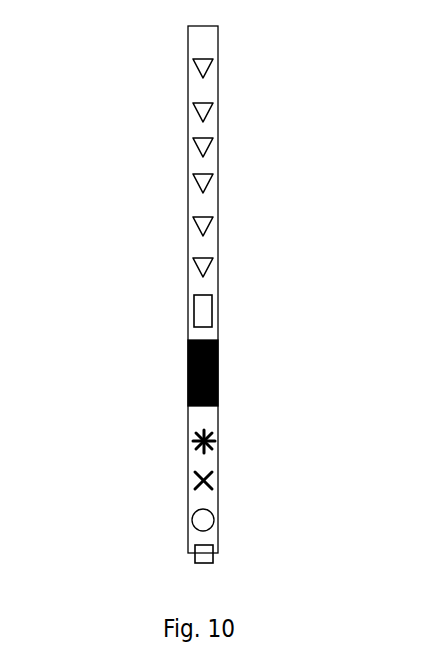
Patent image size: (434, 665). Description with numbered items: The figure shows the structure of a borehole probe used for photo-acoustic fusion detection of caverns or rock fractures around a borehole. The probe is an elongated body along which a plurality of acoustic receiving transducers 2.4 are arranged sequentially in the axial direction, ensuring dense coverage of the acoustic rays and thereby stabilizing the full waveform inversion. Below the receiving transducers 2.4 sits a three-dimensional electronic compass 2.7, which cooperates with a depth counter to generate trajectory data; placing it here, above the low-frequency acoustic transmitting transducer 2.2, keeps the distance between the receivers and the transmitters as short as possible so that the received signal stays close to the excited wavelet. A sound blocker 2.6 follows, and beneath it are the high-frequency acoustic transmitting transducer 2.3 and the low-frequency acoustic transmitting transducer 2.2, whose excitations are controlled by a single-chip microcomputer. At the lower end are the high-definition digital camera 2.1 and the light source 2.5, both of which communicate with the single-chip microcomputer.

The high-definition digital camera 2.1 is at (203, 526).
The low-frequency acoustic transmitting transducer 2.2 is at (195, 482).
The high-frequency acoustic transmitting transducer 2.3 is at (190, 440).
The acoustic receiving transducers 2.4 is at (205, 113).
The light source 2.5 is at (195, 558).
The sound blocker 2.6 is at (219, 383).
The three-dimensional electronic compass 2.7 is at (202, 308).